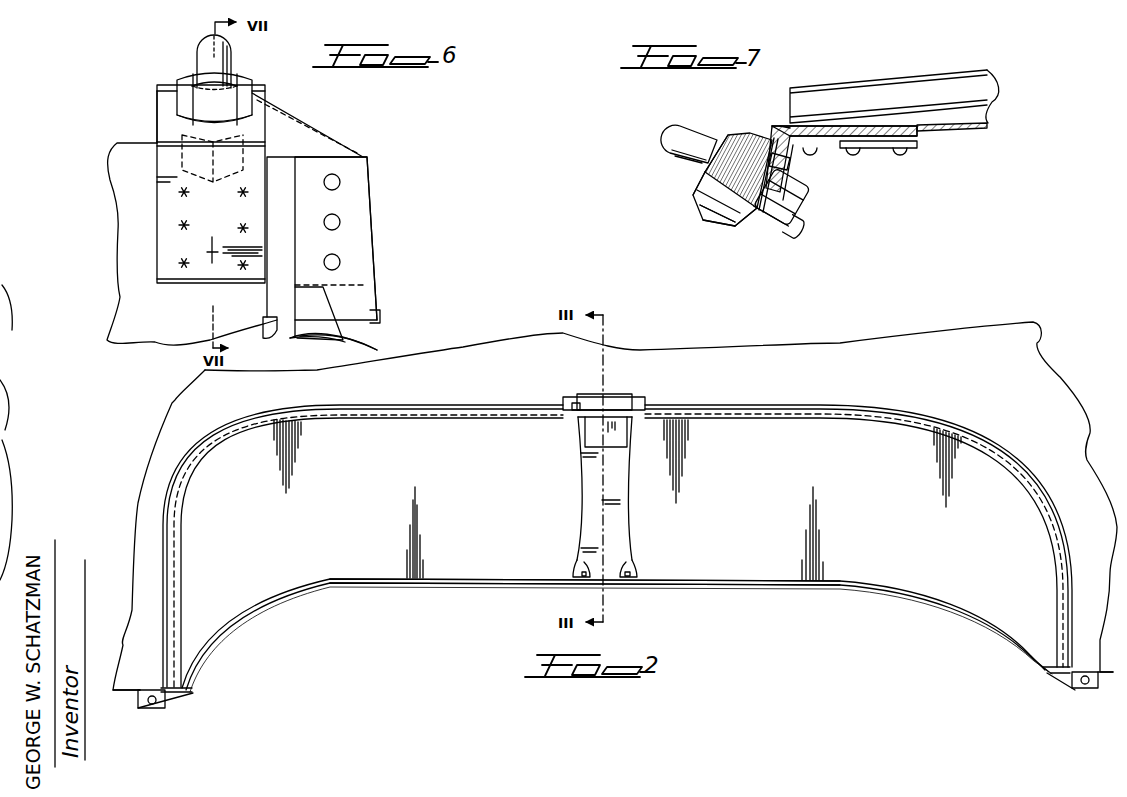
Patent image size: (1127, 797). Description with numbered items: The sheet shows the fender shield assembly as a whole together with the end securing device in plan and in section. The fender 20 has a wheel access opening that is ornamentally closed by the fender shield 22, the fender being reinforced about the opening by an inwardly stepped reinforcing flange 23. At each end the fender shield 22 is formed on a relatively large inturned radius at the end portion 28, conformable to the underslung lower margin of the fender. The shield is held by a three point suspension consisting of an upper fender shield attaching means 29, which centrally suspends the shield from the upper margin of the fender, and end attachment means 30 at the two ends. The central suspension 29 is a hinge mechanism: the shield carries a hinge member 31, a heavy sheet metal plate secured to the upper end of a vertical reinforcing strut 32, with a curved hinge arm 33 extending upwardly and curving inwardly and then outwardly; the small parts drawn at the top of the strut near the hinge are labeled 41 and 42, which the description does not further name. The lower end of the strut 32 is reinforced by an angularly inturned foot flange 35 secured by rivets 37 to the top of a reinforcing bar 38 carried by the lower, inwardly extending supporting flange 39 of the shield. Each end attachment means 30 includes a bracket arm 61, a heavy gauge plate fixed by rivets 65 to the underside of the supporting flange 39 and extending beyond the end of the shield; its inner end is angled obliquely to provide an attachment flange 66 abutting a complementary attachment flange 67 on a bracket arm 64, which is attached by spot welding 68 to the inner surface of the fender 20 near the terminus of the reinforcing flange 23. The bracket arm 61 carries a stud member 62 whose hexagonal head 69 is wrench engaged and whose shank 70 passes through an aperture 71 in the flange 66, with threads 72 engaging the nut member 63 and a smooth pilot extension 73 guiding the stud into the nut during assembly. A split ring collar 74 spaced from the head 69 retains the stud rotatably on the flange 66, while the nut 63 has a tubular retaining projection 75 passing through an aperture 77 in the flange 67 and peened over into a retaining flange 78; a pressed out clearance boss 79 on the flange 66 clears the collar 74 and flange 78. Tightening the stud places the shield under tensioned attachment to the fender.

In FIG. 6, the fender 20 is at (115, 304).
In FIG. 7, the fender 20 is at (983, 137).
In FIG. 2, the fender 20 is at (1050, 407).
In FIG. 6, the fender shield 22 is at (297, 340).
In FIG. 2, the fender shield 22 is at (490, 560).
In FIG. 6, the reinforcing flange 23 is at (272, 310).
In FIG. 2, the inturned end portion 28 is at (188, 650).
In FIG. 2, the upper fender shield attaching means 29 is at (574, 445).
In FIG. 6, the end attachment means 30 is at (364, 147).
In FIG. 7, the end attachment means 30 is at (862, 165).
In FIG. 2, the end attachment means 30 is at (170, 712).
In FIG. 2, the hinge member 31 is at (612, 433).
In FIG. 2, the strut 32 is at (618, 480).
In FIG. 2, the hinge arm 33 is at (612, 402).
In FIG. 2, the foot flange 35 is at (630, 562).
In FIG. 2, the rivets 37 is at (575, 564).
In FIG. 6, the reinforcing bar 38 is at (355, 310).
In FIG. 2, the reinforcing bar 38 is at (687, 577).
In FIG. 6, the supporting flange 39 is at (357, 327).
In FIG. 2, the supporting flange 39 is at (732, 584).
In FIG. 2, the pad 41 is at (573, 412).
In FIG. 2, the clip plate 42 is at (574, 394).
In FIG. 6, the bracket arm 61 is at (308, 138).
In FIG. 7, the bracket arm 61 is at (912, 140).
In FIG. 6, the stud member 62 is at (268, 147).
In FIG. 7, the stud member 62 is at (800, 230).
In FIG. 6, the nut member 63 is at (243, 87).
In FIG. 7, the nut member 63 is at (735, 134).
In FIG. 6, the bracket arm 64 is at (168, 231).
In FIG. 7, the bracket arm 64 is at (785, 129).
In FIG. 6, the rivets 65 is at (340, 222).
In FIG. 7, the rivets 65 is at (910, 153).
In FIG. 7, the attachment flange 66 is at (734, 230).
In FIG. 6, the attachment flange 67 is at (167, 113).
In FIG. 7, the attachment flange 67 is at (715, 228).
In FIG. 6, the spot welding 68 is at (243, 268).
In FIG. 7, the head 69 is at (766, 233).
In FIG. 7, the shank 70 is at (806, 200).
In FIG. 7, the aperture 71 is at (740, 226).
In FIG. 7, the threads 72 is at (708, 176).
In FIG. 6, the pilot extension 73 is at (231, 57).
In FIG. 7, the pilot extension 73 is at (671, 140).
In FIG. 7, the split ring collar 74 is at (795, 184).
In FIG. 7, the tubular retaining projection 75 is at (762, 162).
In FIG. 7, the aperture 77 is at (698, 210).
In FIG. 7, the retaining flange 78 is at (770, 160).
In FIG. 7, the clearance boss 79 is at (790, 165).